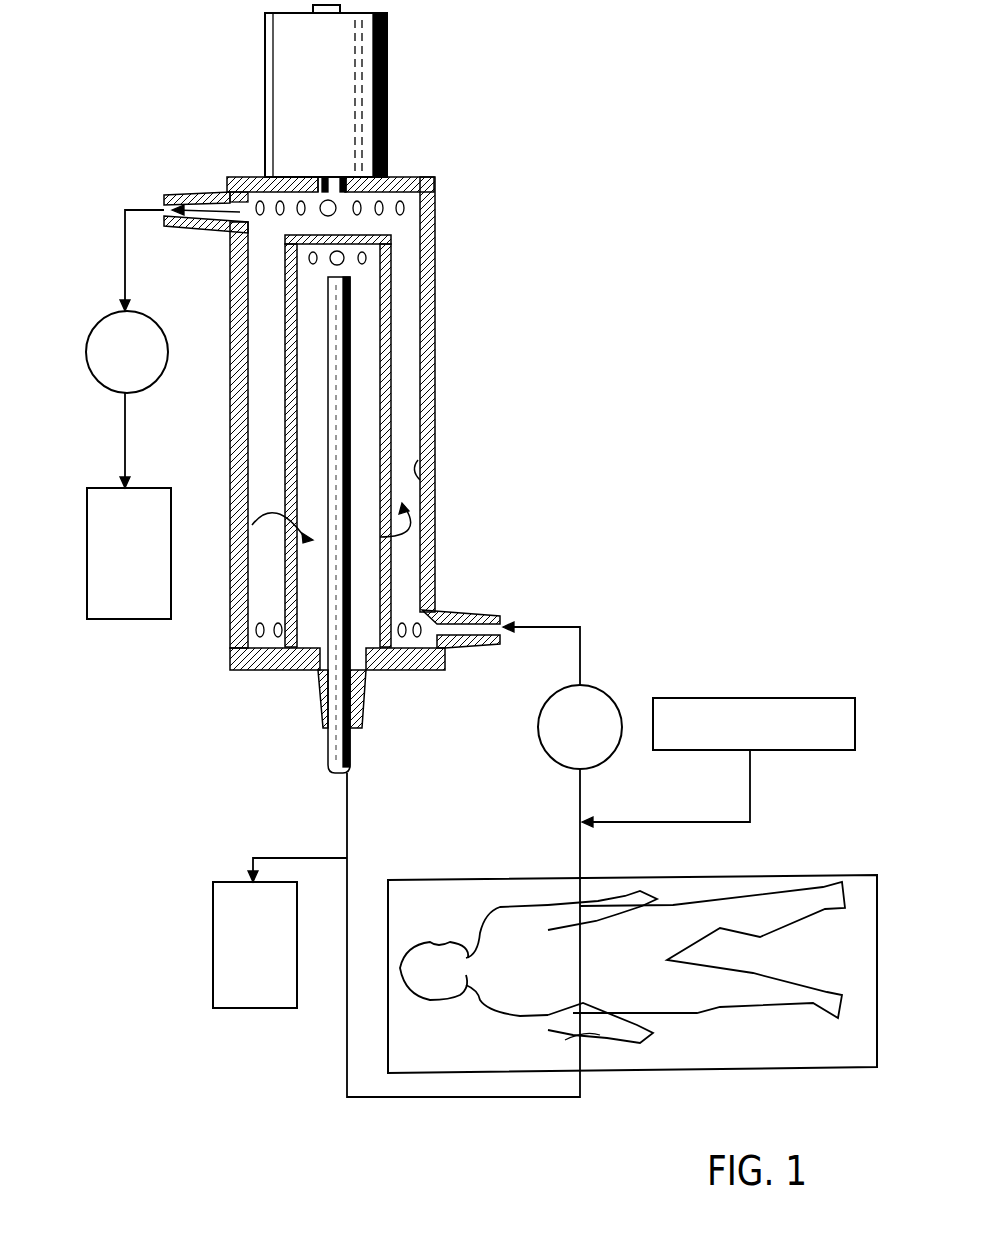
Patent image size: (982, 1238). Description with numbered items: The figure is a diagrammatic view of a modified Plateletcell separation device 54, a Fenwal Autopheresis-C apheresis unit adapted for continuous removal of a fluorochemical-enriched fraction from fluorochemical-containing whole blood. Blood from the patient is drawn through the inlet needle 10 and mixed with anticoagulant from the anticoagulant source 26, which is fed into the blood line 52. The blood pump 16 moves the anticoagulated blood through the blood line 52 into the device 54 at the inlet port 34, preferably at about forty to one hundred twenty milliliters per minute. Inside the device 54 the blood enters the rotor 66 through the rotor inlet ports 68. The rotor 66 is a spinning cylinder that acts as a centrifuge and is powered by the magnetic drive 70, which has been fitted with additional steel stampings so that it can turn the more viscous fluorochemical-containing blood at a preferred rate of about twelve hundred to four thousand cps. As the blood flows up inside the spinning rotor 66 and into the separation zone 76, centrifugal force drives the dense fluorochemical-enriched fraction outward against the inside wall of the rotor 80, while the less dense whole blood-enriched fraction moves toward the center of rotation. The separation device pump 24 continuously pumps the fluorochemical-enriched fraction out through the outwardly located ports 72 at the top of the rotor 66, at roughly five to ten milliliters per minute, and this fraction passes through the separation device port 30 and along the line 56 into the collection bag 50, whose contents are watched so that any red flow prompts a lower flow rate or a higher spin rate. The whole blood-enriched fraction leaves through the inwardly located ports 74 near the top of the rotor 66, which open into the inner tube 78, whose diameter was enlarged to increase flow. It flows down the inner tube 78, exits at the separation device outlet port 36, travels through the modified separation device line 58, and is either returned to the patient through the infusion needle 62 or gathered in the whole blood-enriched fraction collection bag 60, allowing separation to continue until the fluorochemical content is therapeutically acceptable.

The inlet needle 10 is at (573, 903).
The blood pump 16 is at (557, 760).
The separation device pump 24 is at (145, 318).
The anticoagulant source 26 is at (757, 698).
The separation device port 30 is at (172, 194).
The inlet port 34 is at (495, 650).
The separation device outlet port 36 is at (322, 722).
The collection bag 50 is at (117, 580).
The blood line 52 is at (581, 655).
The modified Plateletcell separation device 54 is at (556, 224).
The line 56 is at (125, 260).
The modified separation device line 58 is at (347, 800).
The whole blood-enriched fraction collection bag 60 is at (242, 967).
The infusion needle 62 is at (560, 1045).
The rotor 66 is at (437, 332).
The rotor inlet ports 68 is at (238, 655).
The magnetic drive 70 is at (305, 86).
The outwardly located ports 72 is at (265, 185).
The inwardly located ports 74 is at (300, 252).
The separation zone 76 is at (408, 416).
The inner tube 78 is at (350, 395).
The inside wall of the rotor 80 is at (430, 480).